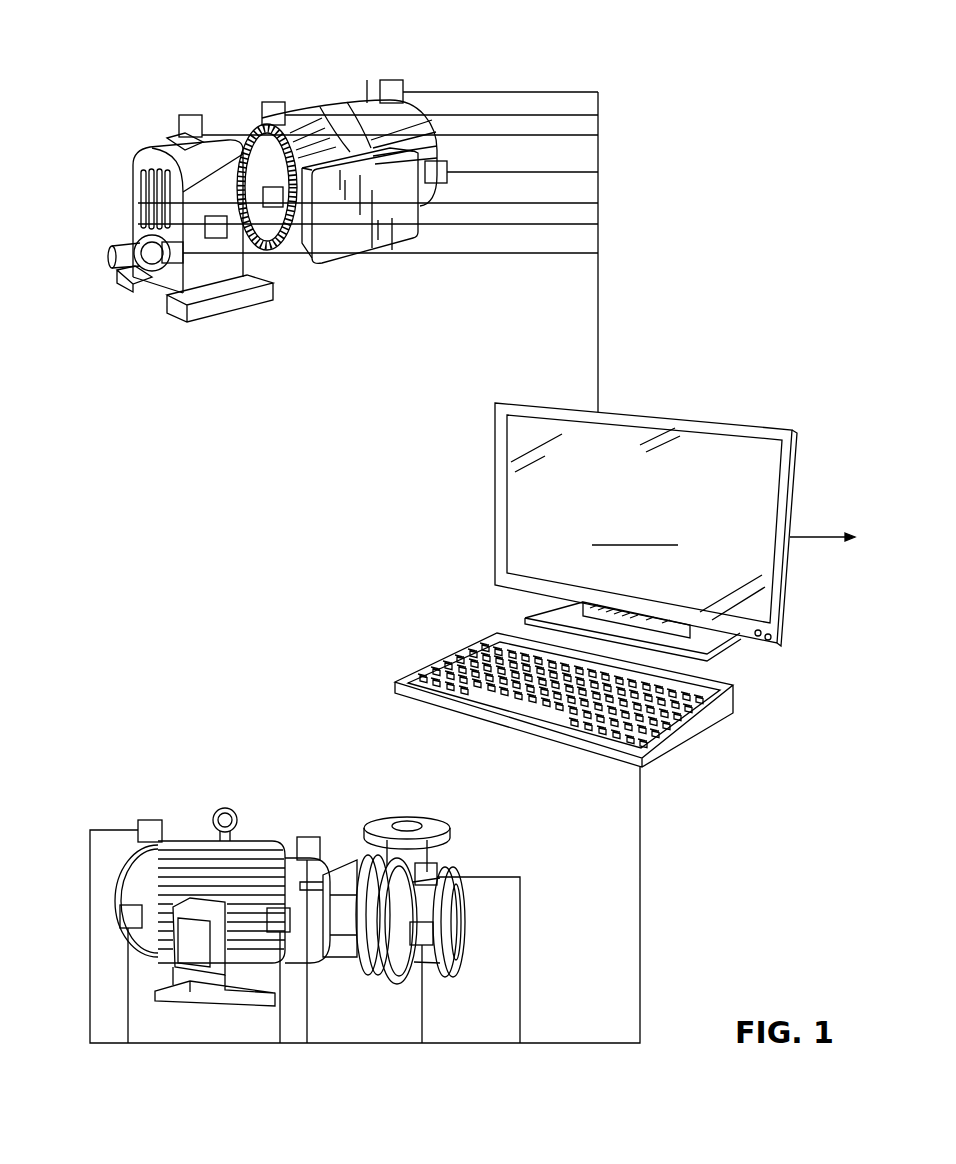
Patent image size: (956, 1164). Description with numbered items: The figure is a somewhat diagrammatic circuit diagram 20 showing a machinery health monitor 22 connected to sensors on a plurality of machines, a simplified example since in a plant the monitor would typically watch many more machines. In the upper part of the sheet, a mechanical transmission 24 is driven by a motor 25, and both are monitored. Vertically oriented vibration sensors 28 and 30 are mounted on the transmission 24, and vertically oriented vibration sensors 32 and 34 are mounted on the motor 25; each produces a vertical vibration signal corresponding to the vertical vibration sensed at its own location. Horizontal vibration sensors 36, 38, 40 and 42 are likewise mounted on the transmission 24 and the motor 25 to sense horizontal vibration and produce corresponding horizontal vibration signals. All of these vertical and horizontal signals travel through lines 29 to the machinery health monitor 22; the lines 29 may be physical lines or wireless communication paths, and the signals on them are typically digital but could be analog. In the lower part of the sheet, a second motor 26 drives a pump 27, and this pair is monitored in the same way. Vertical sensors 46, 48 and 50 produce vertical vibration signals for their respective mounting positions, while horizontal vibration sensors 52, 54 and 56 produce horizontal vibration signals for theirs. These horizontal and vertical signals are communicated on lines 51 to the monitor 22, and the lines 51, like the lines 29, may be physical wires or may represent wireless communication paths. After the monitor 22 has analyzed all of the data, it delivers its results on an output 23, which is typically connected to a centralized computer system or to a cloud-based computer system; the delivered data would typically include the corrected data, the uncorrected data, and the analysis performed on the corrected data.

The circuit diagram 20 is at (660, 86).
The machinery health monitor 22 is at (655, 412).
The output 23 is at (815, 536).
The mechanical transmission 24 is at (146, 145).
The motor 25 is at (343, 103).
The motor 26 is at (190, 838).
The pump 27 is at (425, 820).
The vertically oriented vibration sensor 28 is at (138, 224).
The lines 29 is at (598, 155).
The vertically oriented vibration sensor 30 is at (196, 115).
The vertically oriented vibration sensor 32 is at (278, 102).
The vertically oriented vibration sensor 34 is at (395, 80).
The horizontal vibration sensor 36 is at (153, 283).
The horizontal vibration sensor 38 is at (141, 172).
The horizontal vibration sensor 40 is at (263, 199).
The horizontal vibration sensor 42 is at (441, 161).
The vertical sensor 46 is at (148, 820).
The vertical sensor 48 is at (310, 837).
The vertical sensor 50 is at (437, 862).
The lines 51 is at (578, 1041).
The horizontal vibration sensor 52 is at (433, 945).
The horizontal vibration sensor 54 is at (290, 930).
The horizontal vibration sensor 56 is at (120, 930).